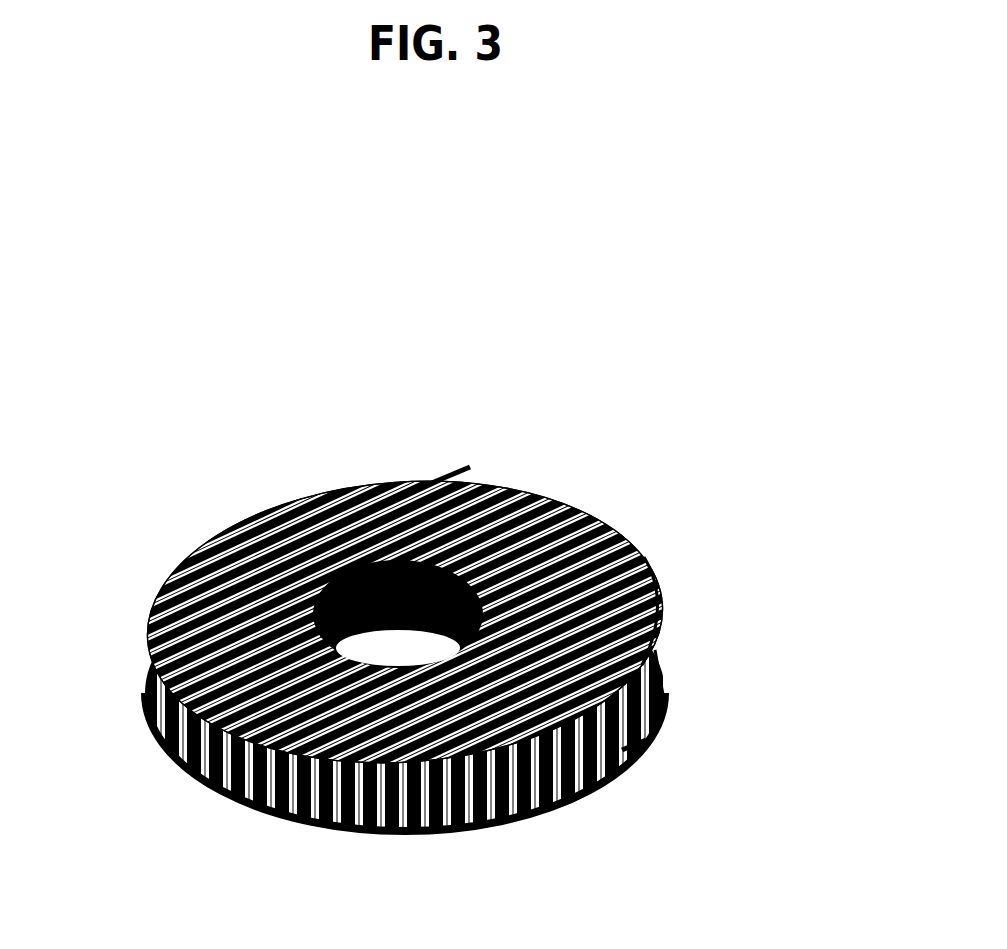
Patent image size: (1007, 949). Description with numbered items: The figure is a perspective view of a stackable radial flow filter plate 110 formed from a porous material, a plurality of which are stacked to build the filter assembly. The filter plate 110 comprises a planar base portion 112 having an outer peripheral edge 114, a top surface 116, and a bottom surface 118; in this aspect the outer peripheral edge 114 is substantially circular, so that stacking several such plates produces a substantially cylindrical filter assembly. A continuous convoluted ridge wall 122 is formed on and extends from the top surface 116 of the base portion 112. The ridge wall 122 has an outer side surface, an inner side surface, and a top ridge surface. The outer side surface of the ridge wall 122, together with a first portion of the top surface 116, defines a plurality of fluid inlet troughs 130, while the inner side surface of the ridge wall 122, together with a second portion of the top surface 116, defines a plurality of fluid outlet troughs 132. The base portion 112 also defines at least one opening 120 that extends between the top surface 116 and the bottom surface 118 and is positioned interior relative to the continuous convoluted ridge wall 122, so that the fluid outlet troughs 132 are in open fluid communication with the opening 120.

The filter plate 110 is at (704, 464).
The planar base portion 112 is at (188, 776).
The outer peripheral edge 114 is at (662, 710).
The top surface 116 is at (572, 793).
The bottom surface 118 is at (375, 838).
The opening 120 is at (350, 656).
The convoluted ridge wall 122 is at (172, 573).
The fluid inlet troughs 130 is at (150, 697).
The fluid outlet troughs 132 is at (658, 620).